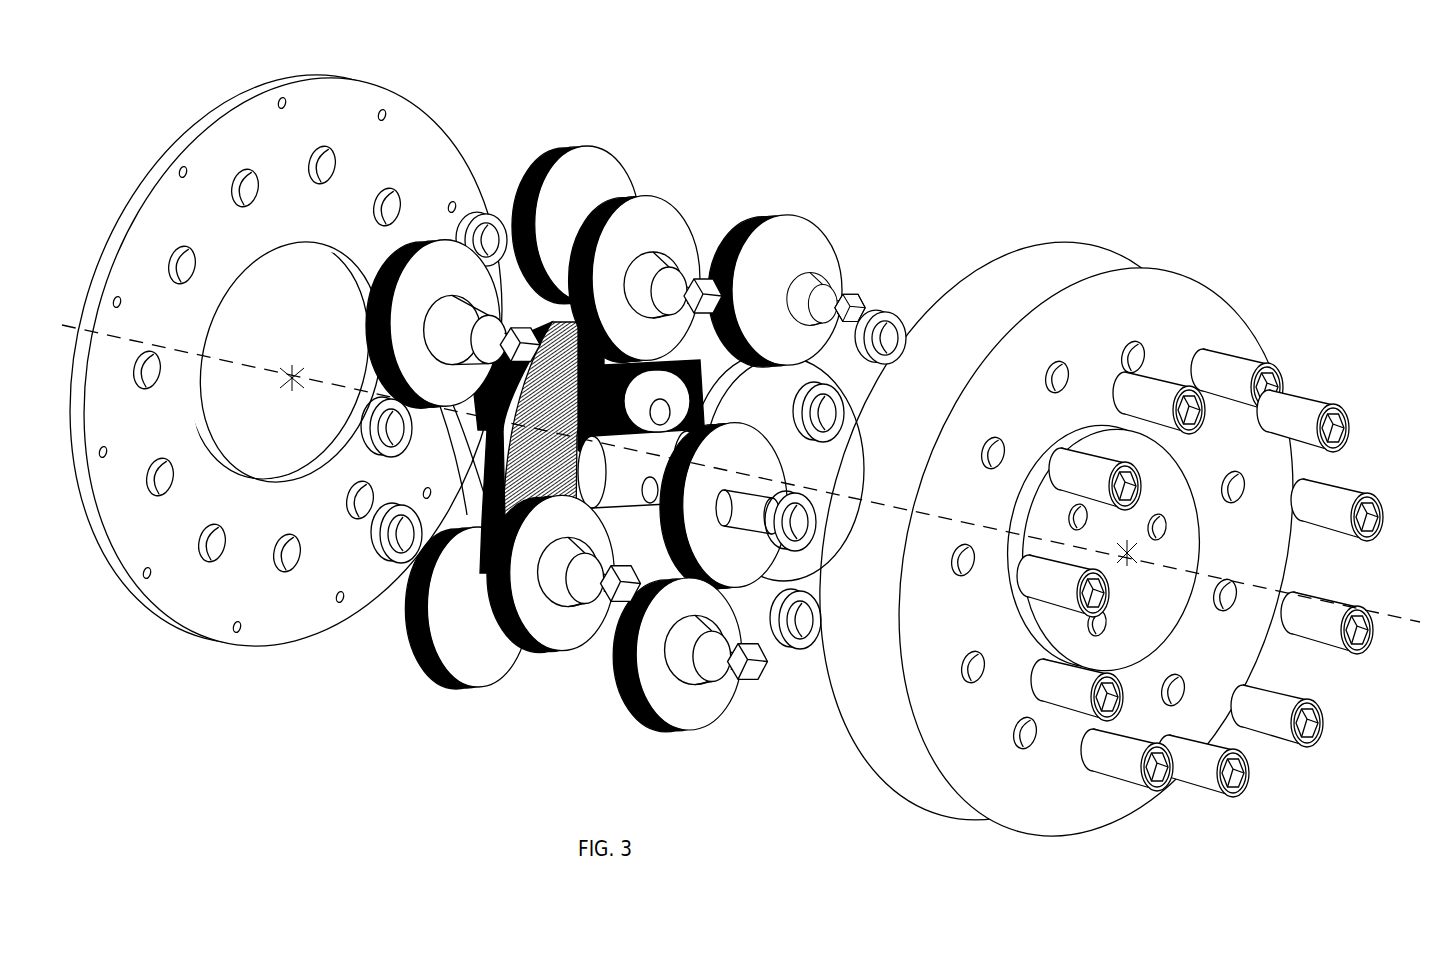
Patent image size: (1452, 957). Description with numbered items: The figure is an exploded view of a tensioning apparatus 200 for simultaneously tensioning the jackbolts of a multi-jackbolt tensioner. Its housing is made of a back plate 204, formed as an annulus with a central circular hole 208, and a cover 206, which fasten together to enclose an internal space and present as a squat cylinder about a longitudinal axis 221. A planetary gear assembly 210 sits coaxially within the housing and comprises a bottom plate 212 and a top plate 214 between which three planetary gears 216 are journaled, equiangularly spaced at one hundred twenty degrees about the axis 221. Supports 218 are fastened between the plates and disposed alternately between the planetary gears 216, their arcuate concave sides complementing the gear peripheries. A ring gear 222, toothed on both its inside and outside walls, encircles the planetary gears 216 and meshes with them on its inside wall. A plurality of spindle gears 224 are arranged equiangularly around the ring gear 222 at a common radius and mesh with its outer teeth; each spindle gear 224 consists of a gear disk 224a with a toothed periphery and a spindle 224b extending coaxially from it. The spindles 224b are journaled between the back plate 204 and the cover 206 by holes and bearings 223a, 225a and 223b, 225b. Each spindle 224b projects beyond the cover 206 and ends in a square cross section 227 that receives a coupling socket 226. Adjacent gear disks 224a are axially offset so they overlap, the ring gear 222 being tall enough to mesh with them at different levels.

The tensioning apparatus 200 is at (1041, 168).
The back plate 204 is at (290, 620).
The cover 206 is at (912, 760).
The central circular hole 208 is at (311, 346).
The planetary gear assembly 210 is at (806, 384).
The bottom plate 212 is at (495, 455).
The top plate 214 is at (795, 424).
The planetary gears 216 is at (660, 396).
The supports 218 is at (656, 472).
The longitudinal axis 221 is at (880, 503).
The ring gear 222 is at (508, 437).
The holes and bearings of the base plate 223a is at (233, 187).
The holes and bearings of the cover 223b is at (1056, 372).
The spindle gears 224 is at (822, 247).
The gear disk 224a is at (781, 212).
The spindle 224b is at (830, 300).
The bearings of the base plate 225a is at (485, 215).
The bearings of the cover 225b is at (910, 327).
The coupling socket 226 is at (1310, 410).
The square cross section 227 is at (864, 303).